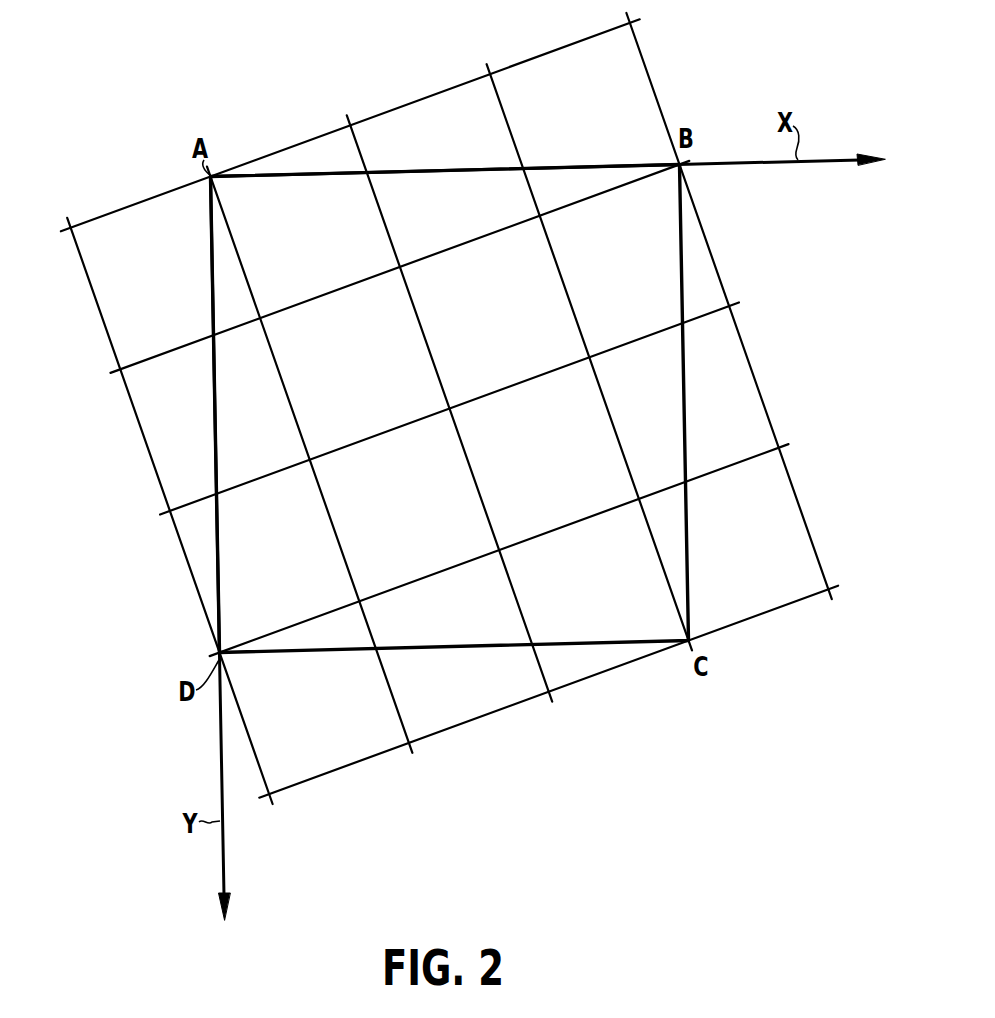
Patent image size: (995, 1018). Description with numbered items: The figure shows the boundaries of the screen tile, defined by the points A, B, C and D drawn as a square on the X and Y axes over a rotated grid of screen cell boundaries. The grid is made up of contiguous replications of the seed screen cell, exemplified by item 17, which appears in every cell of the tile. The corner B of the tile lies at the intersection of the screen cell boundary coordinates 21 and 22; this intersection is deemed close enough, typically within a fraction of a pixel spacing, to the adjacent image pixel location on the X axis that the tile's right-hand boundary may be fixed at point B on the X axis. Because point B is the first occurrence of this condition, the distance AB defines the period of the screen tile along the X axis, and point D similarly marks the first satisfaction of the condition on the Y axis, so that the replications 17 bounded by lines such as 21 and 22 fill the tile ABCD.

The seed screen cell replication 17 is at (450, 409).
The screen cell boundary coordinate 21 is at (616, 186).
The screen cell boundary coordinate 22 is at (649, 80).